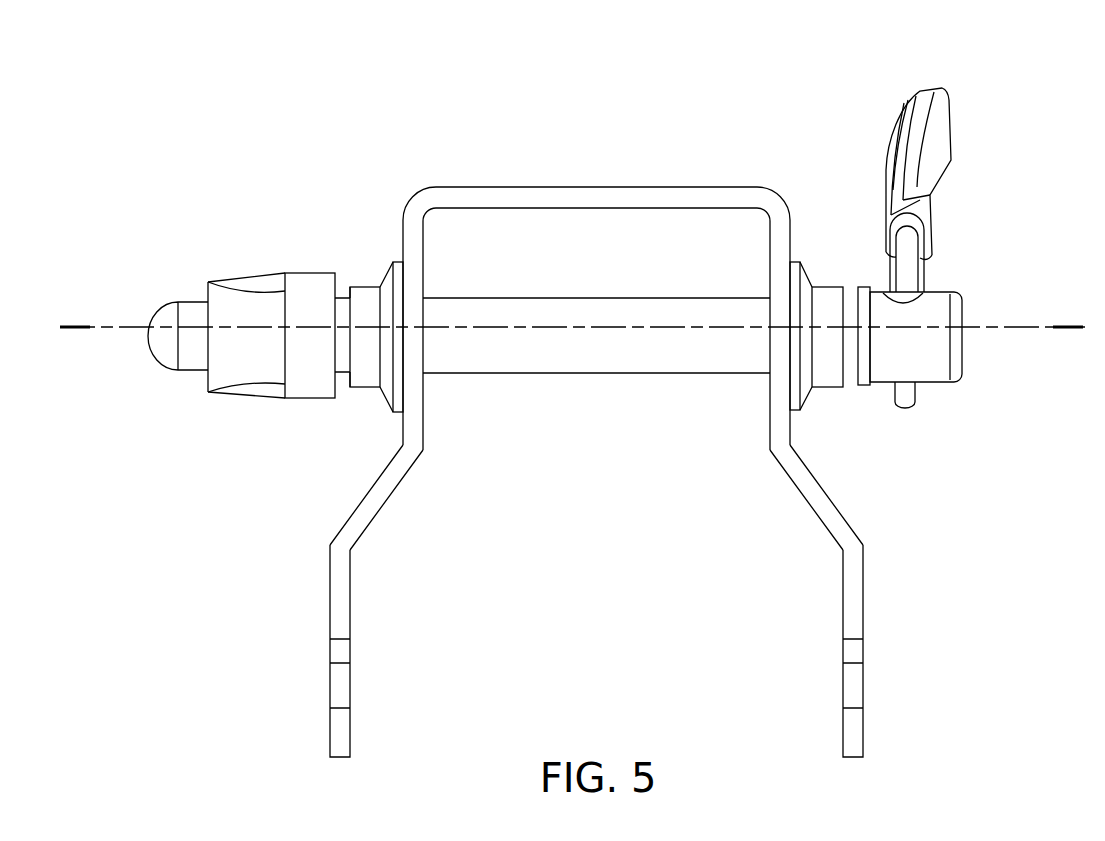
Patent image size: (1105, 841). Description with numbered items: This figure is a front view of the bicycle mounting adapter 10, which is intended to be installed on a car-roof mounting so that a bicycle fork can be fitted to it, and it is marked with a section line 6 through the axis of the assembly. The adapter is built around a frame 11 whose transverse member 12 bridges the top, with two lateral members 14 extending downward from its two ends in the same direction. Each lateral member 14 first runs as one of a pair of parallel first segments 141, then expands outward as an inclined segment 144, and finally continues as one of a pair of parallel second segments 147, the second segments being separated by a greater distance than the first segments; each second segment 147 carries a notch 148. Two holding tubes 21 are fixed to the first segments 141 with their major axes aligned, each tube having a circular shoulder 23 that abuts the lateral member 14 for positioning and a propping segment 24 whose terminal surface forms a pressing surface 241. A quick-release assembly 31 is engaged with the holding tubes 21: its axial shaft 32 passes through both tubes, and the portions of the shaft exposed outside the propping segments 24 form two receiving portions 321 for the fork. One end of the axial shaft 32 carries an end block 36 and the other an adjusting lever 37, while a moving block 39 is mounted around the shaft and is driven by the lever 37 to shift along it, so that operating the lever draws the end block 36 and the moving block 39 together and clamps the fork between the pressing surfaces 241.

The section line 6- 6 is at (74, 292).
The bicycle mounting adapter 10 is at (665, 130).
The frame 11 is at (555, 172).
The transverse member 12 is at (597, 187).
The lateral member 14 is at (325, 535).
The first segment 141 is at (403, 223).
The inclined segment 144 is at (367, 482).
The second segment 147 is at (330, 595).
The notch 148 is at (330, 685).
The holding tube 21 is at (365, 287).
The shoulder 23 is at (393, 262).
The propping segment 24 is at (381, 268).
The pressing surface 241 is at (347, 287).
The quick-release assembly 31 is at (912, 95).
The axial shaft 32 is at (596, 373).
The receiving portion 321 is at (340, 292).
The end block 36 is at (223, 273).
The adjusting lever 37 is at (949, 125).
The moving block 39 is at (942, 292).